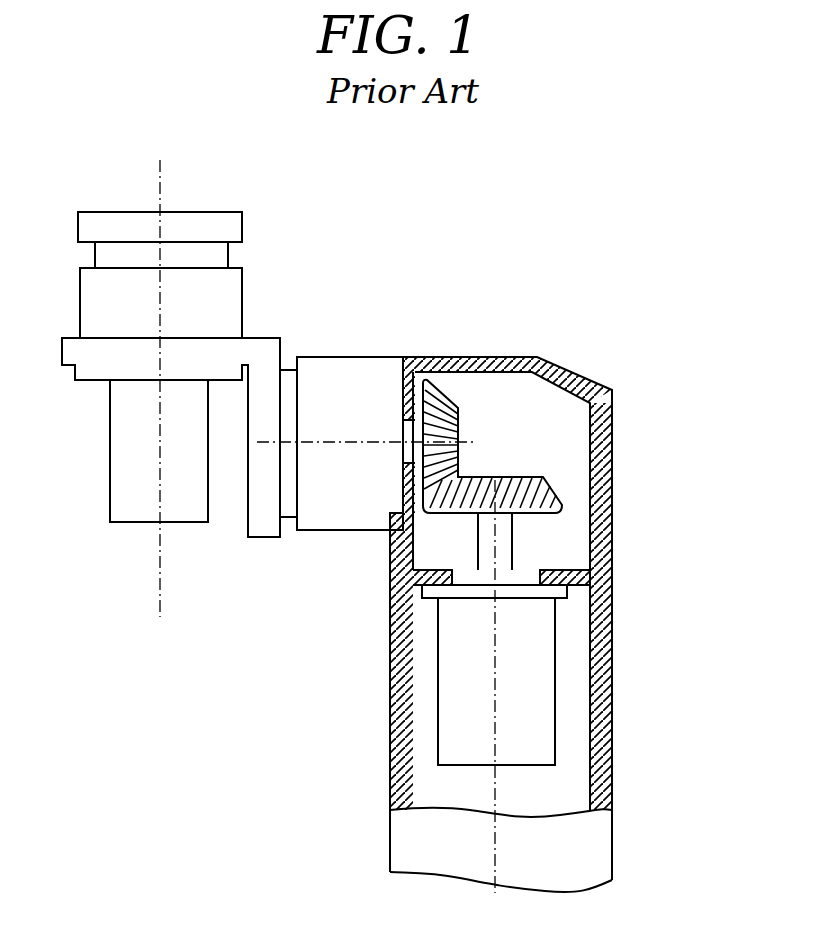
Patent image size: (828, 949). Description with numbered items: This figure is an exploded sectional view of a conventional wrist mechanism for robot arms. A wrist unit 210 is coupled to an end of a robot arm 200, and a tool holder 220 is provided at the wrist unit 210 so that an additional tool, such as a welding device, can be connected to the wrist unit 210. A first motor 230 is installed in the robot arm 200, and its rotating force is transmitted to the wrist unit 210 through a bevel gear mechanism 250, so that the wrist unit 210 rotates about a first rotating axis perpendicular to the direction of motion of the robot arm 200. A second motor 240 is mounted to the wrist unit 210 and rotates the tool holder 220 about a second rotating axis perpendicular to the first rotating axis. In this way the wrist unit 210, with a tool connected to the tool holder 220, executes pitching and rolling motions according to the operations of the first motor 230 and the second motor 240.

The robot arm 200 is at (580, 370).
The wrist unit 210 is at (353, 352).
The tool holder 220 is at (242, 223).
The first motor 230 is at (556, 692).
The second motor 240 is at (122, 517).
The bevel gear mechanism 250 is at (556, 488).